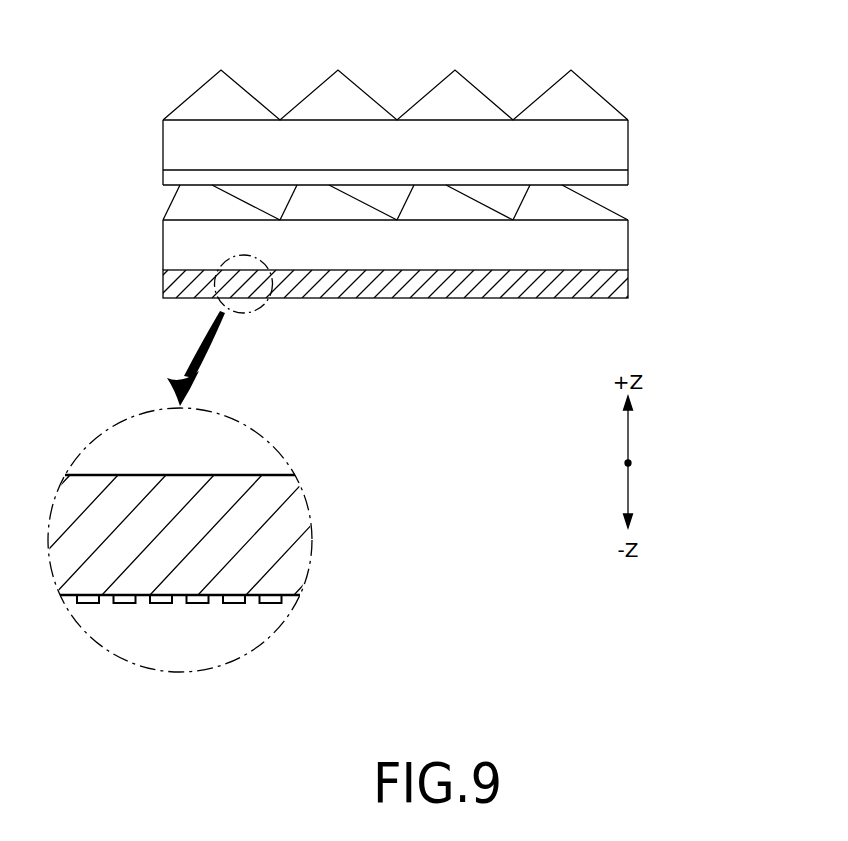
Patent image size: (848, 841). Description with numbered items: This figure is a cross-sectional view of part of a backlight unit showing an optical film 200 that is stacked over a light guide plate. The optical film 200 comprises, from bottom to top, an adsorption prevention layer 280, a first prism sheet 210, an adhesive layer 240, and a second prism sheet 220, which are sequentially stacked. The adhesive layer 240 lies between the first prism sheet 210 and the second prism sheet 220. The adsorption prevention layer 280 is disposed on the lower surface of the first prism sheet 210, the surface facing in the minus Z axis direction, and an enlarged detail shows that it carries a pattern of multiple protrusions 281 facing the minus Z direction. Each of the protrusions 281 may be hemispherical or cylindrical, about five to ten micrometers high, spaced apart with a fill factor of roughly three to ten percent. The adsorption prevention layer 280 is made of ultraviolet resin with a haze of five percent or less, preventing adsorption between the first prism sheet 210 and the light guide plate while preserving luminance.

The optical film 200 is at (373, 30).
The second prism sheet 220 is at (616, 99).
The adhesive layer 240 is at (622, 178).
The first prism sheet 210 is at (631, 243).
The adsorption prevention layer 280 is at (623, 287).
The protrusions 281 is at (197, 603).